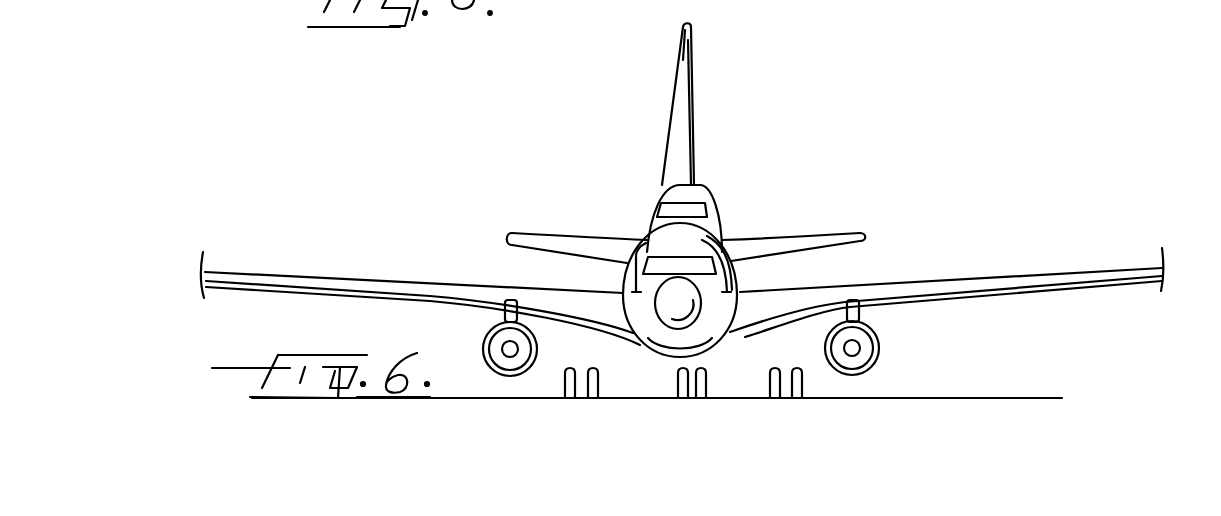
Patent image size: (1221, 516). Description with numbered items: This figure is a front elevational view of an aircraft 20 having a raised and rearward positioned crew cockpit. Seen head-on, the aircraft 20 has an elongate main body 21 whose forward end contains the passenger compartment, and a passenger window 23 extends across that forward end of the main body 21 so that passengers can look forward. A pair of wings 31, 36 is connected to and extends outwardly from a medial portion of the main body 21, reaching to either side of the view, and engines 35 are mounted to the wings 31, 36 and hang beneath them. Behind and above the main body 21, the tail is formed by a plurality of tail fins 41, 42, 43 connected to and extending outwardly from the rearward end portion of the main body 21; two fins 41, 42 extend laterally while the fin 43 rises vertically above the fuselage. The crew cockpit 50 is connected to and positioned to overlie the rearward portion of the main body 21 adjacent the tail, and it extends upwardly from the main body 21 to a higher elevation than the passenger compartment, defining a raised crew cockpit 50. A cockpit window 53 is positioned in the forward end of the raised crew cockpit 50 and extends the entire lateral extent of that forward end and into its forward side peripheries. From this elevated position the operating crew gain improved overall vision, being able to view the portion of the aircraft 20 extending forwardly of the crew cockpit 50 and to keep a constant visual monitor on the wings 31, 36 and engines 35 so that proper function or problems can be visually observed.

The aircraft 20 is at (960, 116).
The main body 21 is at (653, 224).
The passenger window 23 is at (716, 266).
The wing 31 is at (938, 280).
The engines 35 is at (484, 342).
The wing 36 is at (411, 281).
The tail fin 41 is at (555, 233).
The tail fin 42 is at (825, 190).
The tail fin 43 is at (692, 93).
The crew cockpit 50 is at (713, 184).
The cockpit window 53 is at (677, 204).